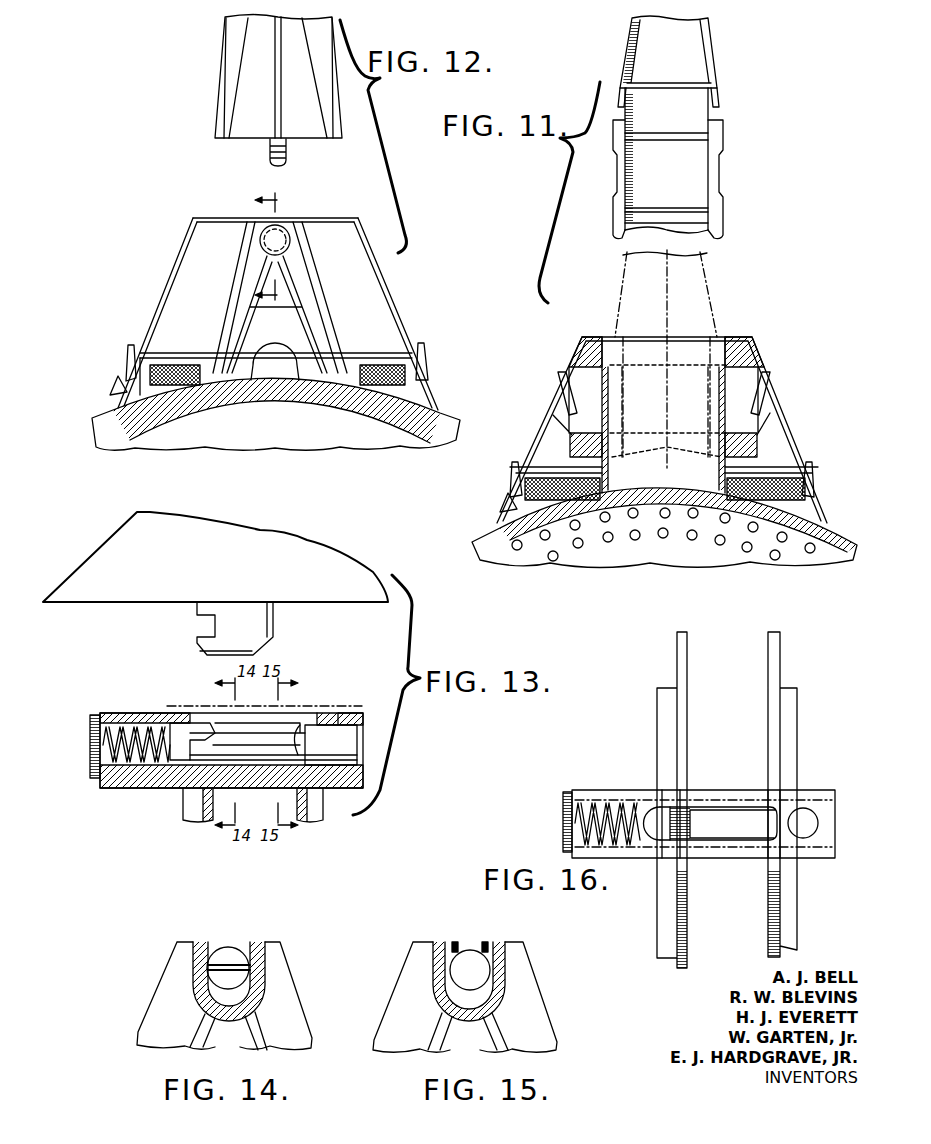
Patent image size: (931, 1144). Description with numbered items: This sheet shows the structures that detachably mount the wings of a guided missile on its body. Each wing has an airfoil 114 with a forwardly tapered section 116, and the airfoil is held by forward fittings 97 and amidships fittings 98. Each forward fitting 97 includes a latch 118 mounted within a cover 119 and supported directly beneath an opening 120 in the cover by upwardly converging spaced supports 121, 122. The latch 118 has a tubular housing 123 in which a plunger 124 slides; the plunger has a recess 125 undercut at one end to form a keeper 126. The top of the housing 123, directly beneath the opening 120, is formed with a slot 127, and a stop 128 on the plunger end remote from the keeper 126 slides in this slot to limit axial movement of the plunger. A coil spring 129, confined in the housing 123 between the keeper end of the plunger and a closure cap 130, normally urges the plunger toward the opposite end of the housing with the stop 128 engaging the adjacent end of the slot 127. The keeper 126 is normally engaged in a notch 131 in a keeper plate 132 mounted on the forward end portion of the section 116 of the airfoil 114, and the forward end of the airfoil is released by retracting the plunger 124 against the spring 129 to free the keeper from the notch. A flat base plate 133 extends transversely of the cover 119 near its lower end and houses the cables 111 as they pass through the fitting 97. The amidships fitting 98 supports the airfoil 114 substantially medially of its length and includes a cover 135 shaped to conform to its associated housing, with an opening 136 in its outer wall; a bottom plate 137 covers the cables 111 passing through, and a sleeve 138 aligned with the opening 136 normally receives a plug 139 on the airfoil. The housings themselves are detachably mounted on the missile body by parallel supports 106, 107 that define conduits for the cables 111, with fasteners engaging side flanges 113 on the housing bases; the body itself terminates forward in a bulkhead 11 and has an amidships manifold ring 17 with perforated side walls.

In FIG. 12, the bulkhead 11 is at (280, 375).
In FIG. 11, the amidships manifold ring 17 is at (650, 544).
In FIG. 12, the forward fitting 97 is at (273, 324).
In FIG. 16, the forward fitting 97 is at (664, 800).
In FIG. 11, the amidships fitting 98 is at (661, 417).
In FIG. 12, the support 106 is at (116, 378).
In FIG. 11, the support 106 is at (508, 495).
In FIG. 12, the support 107 is at (434, 372).
In FIG. 11, the support 107 is at (818, 490).
In FIG. 12, the cables 111 is at (427, 388).
In FIG. 11, the cables 111 is at (817, 510).
In FIG. 12, the side flange 113 is at (128, 356).
In FIG. 11, the side flange 113 is at (811, 472).
In FIG. 12, the airfoil 114 is at (234, 91).
In FIG. 11, the airfoil 114 is at (722, 76).
In FIG. 12, the forwardly tapered section 116 is at (277, 86).
In FIG. 13, the forwardly tapered section 116 is at (262, 542).
In FIG. 12, the latch 118 is at (275, 279).
In FIG. 13, the latch 118 is at (213, 759).
In FIG. 16, the latch 118 is at (660, 830).
In FIG. 14, the latch 118 is at (219, 973).
In FIG. 15, the latch 118 is at (473, 978).
In FIG. 12, the cover 119 is at (390, 298).
In FIG. 12, the opening 120 is at (320, 219).
In FIG. 12, the support 121 is at (217, 308).
In FIG. 13, the support 121 is at (187, 814).
In FIG. 16, the support 121 is at (667, 744).
In FIG. 14, the support 121 is at (288, 999).
In FIG. 15, the support 121 is at (390, 1033).
In FIG. 12, the support 122 is at (335, 308).
In FIG. 16, the support 122 is at (793, 898).
In FIG. 14, the support 122 is at (148, 1024).
In FIG. 15, the support 122 is at (545, 1038).
In FIG. 12, the tubular housing 123 is at (262, 247).
In FIG. 13, the tubular housing 123 is at (322, 784).
In FIG. 16, the tubular housing 123 is at (715, 860).
In FIG. 14, the tubular housing 123 is at (205, 998).
In FIG. 15, the tubular housing 123 is at (493, 1004).
In FIG. 13, the plunger 124 is at (331, 745).
In FIG. 14, the plunger 124 is at (207, 973).
In FIG. 15, the plunger 124 is at (450, 996).
In FIG. 13, the recess 125 is at (300, 713).
In FIG. 15, the recess 125 is at (457, 977).
In FIG. 13, the keeper 126 is at (173, 717).
In FIG. 16, the keeper 126 is at (660, 813).
In FIG. 14, the keeper 126 is at (227, 957).
In FIG. 13, the slot 127 is at (217, 713).
In FIG. 16, the slot 127 is at (708, 807).
In FIG. 14, the slot 127 is at (240, 942).
In FIG. 13, the stop 128 is at (340, 716).
In FIG. 16, the stop 128 is at (803, 818).
In FIG. 15, the stop 128 is at (472, 943).
In FIG. 13, the coil spring 129 is at (147, 764).
In FIG. 16, the coil spring 129 is at (605, 795).
In FIG. 12, the closure cap 130 is at (288, 238).
In FIG. 13, the closure cap 130 is at (90, 748).
In FIG. 16, the closure cap 130 is at (563, 812).
In FIG. 13, the notch 131 is at (196, 630).
In FIG. 12, the keeper plate 132 is at (268, 153).
In FIG. 13, the keeper plate 132 is at (233, 628).
In FIG. 12, the flat base plate 133 is at (188, 353).
In FIG. 11, the cover 135 is at (781, 424).
In FIG. 11, the opening 136 is at (718, 338).
In FIG. 11, the bottom plate 137 is at (750, 472).
In FIG. 11, the sleeve 138 is at (744, 346).
In FIG. 11, the plug 139 is at (718, 162).